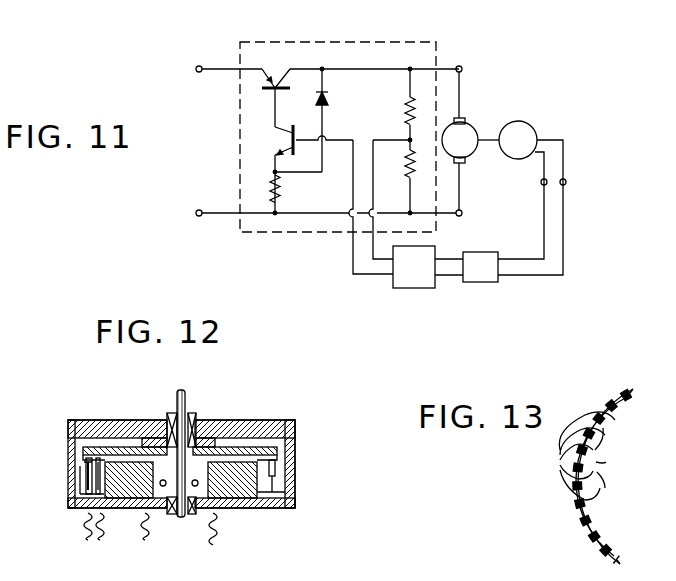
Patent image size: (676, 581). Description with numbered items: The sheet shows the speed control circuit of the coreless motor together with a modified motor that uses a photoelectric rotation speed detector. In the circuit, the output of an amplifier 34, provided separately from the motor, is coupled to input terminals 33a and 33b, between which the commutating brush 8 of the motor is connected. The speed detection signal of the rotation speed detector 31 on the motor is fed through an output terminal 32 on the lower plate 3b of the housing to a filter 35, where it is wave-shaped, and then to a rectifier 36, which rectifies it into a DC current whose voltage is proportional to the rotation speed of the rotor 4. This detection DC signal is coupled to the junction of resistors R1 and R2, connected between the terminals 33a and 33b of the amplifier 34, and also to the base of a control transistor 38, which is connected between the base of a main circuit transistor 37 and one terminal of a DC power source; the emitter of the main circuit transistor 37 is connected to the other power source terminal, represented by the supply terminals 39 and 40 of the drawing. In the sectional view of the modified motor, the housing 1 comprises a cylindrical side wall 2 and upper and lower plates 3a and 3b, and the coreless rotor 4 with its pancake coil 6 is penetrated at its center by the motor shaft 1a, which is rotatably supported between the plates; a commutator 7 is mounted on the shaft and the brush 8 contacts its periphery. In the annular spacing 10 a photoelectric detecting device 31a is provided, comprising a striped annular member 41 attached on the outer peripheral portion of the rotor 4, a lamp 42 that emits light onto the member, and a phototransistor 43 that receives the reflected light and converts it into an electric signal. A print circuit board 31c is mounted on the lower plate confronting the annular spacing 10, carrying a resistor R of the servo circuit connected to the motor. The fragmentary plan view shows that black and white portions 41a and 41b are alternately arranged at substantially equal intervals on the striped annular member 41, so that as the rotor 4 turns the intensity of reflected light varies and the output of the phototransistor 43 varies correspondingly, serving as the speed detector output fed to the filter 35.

In FIG. 12, the motor housing 1 is at (297, 430).
In FIG. 12, the motor shaft 1a is at (184, 393).
In FIG. 12, the cylindrical side wall 2 is at (288, 488).
In FIG. 12, the upper plate 3a is at (262, 420).
In FIG. 12, the lower plate 3b is at (260, 508).
In FIG. 11, the coreless rotor 4 is at (470, 128).
In FIG. 12, the coreless rotor 4 is at (104, 447).
In FIG. 12, the pancake coil 6 is at (133, 447).
In FIG. 12, the commutator 7 is at (187, 515).
In FIG. 11, the brush 8 is at (454, 118).
In FIG. 12, the brush 8 is at (222, 505).
In FIG. 12, the annular spacing 10 is at (97, 468).
In FIG. 11, the rotation speed detector 31 is at (530, 128).
In FIG. 12, the photoelectric rotation speed detecting device 31a is at (88, 474).
In FIG. 12, the print circuit board 31c is at (284, 506).
In FIG. 11, the output terminal 32 is at (569, 184).
In FIG. 12, the output terminal 32 is at (88, 540).
In FIG. 11, the input terminal 33a is at (475, 80).
In FIG. 12, the input terminal 33a is at (145, 540).
In FIG. 11, the input terminal 33b is at (462, 215).
In FIG. 12, the input terminal 33b is at (213, 545).
In FIG. 11, the amplifier 34 is at (355, 42).
In FIG. 11, the filter 35 is at (478, 282).
In FIG. 11, the rectifier 36 is at (410, 288).
In FIG. 11, the main circuit transistor 37 is at (275, 75).
In FIG. 11, the control transistor 38 is at (284, 138).
In FIG. 11, the supply terminal 39 is at (310, 214).
In FIG. 11, the supply terminal 40 is at (312, 70).
In FIG. 12, the striped annular member 41 is at (88, 462).
In FIG. 13, the striped annular member 41 is at (582, 529).
In FIG. 13, the black portion 41a is at (619, 458).
In FIG. 13, the white portion 41b is at (569, 456).
In FIG. 12, the lamp 42 is at (108, 503).
In FIG. 12, the phototransistor 43 is at (80, 488).
In FIG. 12, the resistor R is at (275, 468).
In FIG. 11, the resistor R1 is at (404, 116).
In FIG. 11, the resistor R2 is at (406, 164).